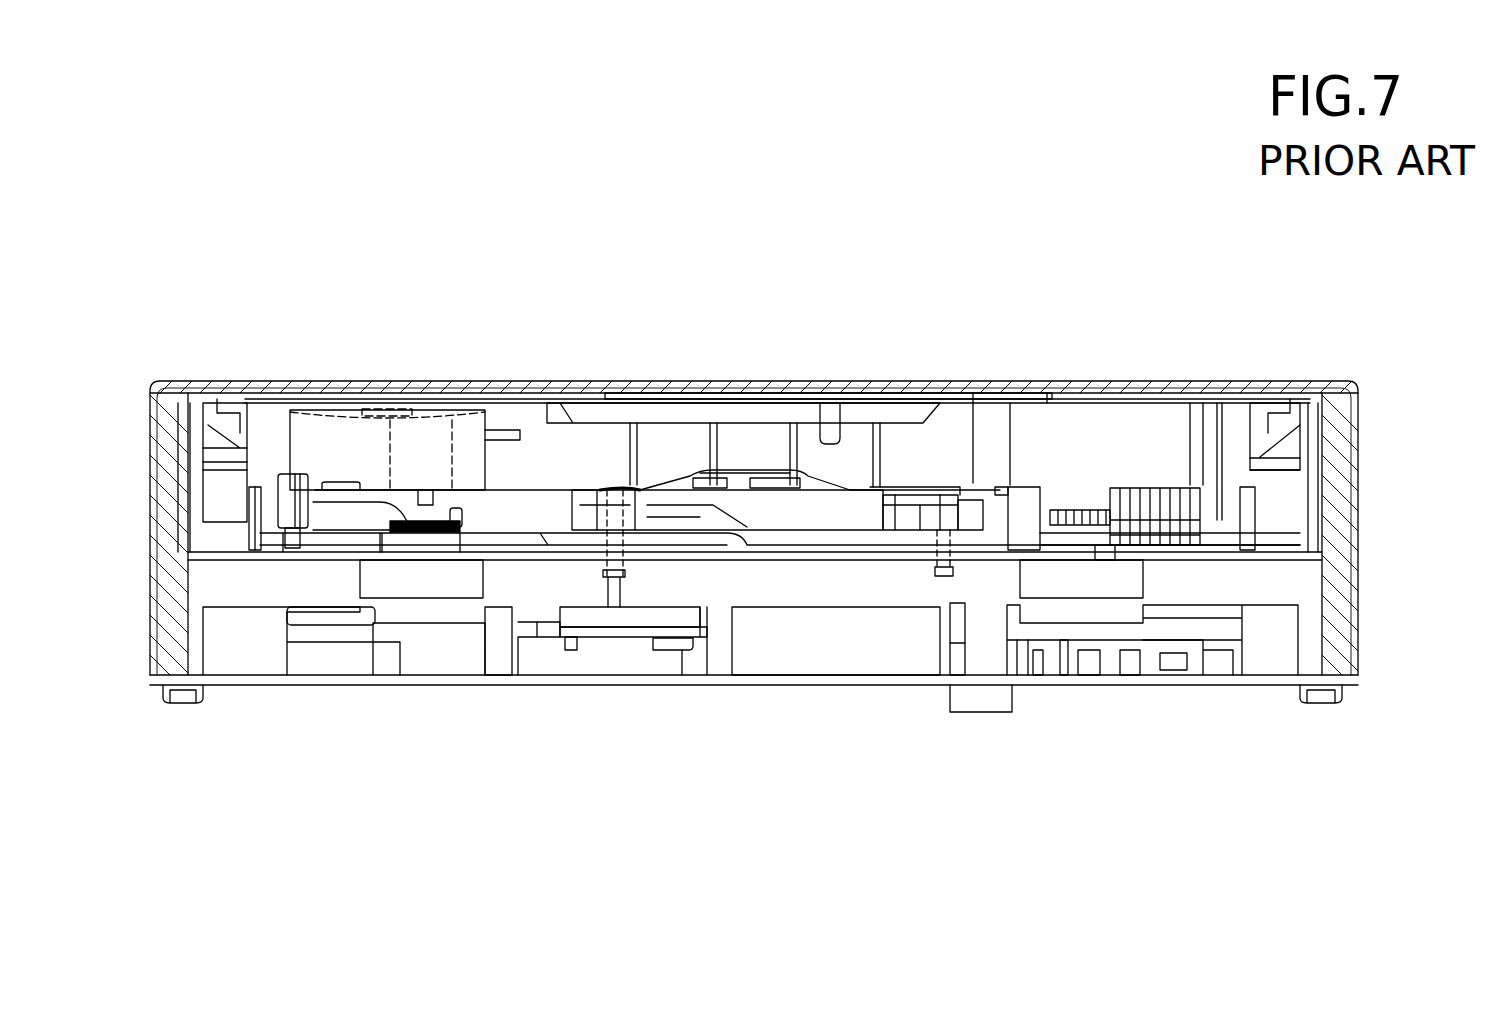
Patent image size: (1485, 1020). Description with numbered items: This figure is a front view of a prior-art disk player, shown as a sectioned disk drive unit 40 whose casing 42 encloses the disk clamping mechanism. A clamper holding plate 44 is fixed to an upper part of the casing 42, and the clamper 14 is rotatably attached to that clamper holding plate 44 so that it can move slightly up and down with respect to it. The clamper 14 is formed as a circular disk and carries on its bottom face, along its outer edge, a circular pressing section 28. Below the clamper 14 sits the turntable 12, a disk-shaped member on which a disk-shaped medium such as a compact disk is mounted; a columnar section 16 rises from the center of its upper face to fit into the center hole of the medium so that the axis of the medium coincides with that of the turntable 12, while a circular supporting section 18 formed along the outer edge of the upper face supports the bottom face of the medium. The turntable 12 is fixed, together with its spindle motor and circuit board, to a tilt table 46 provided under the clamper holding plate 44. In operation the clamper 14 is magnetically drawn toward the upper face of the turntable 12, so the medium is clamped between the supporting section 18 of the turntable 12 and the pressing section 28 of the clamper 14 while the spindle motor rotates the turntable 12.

The disk drive unit 40 is at (369, 338).
The turntable 12 is at (657, 478).
The columnar section 16 is at (775, 486).
The pressing section 28 is at (840, 440).
The supporting section 18 is at (849, 483).
The clamper 14 is at (893, 400).
The tilt table 46 is at (905, 505).
The clamper holding plate 44 is at (1072, 398).
The casing 42 is at (1337, 592).